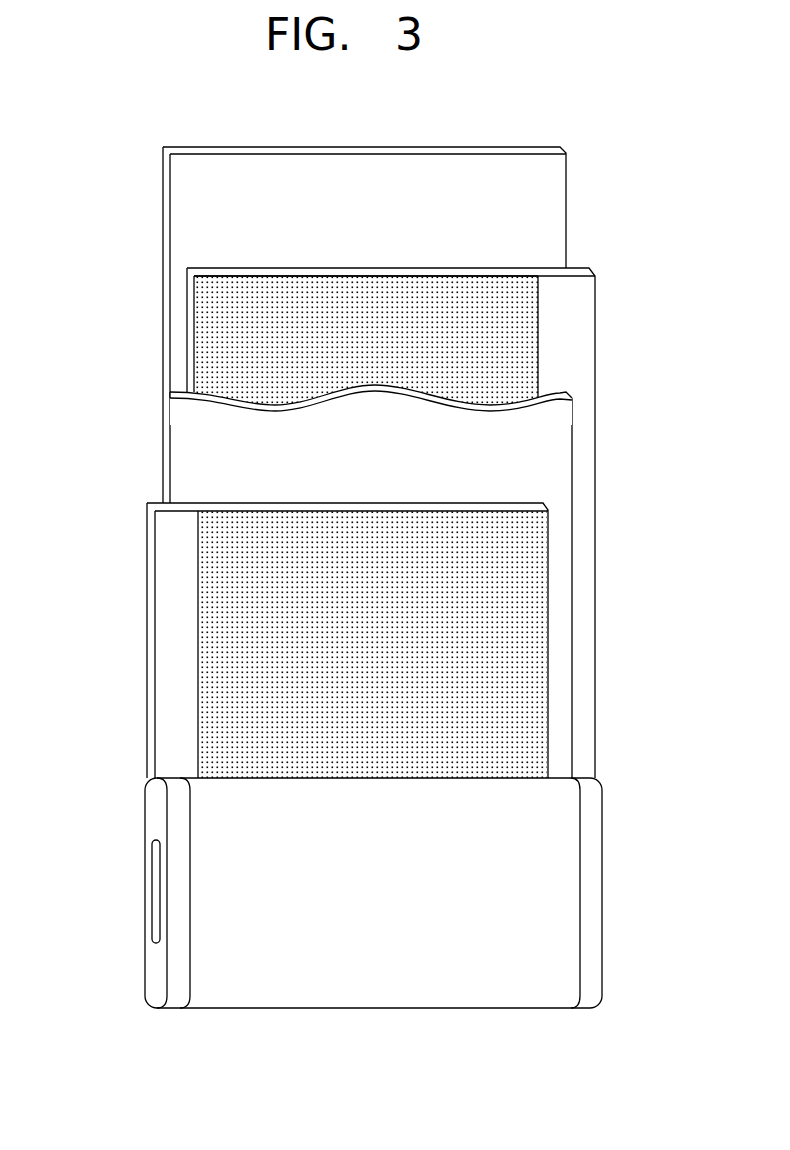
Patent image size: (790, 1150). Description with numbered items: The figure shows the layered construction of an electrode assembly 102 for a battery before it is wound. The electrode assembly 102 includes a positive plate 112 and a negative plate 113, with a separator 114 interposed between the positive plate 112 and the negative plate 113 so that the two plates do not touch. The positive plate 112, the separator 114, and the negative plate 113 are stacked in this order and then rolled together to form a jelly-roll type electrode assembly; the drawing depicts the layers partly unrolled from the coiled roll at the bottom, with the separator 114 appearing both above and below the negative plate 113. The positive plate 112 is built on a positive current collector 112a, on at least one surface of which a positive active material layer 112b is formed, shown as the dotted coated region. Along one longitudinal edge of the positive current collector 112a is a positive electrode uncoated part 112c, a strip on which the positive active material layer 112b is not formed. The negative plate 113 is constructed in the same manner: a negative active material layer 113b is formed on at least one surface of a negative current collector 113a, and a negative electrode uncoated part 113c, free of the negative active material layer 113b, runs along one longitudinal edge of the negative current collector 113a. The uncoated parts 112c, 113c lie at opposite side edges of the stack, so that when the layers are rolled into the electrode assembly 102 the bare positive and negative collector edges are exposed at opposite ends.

The electrode assembly 102 is at (378, 984).
The positive plate 112 is at (355, 615).
The positive current collector 112a is at (357, 506).
The positive active material layer 112b is at (528, 660).
The positive electrode uncoated part 112c is at (165, 695).
The negative plate 113 is at (366, 499).
The negative current collector 113a is at (368, 272).
The negative active material layer 113b is at (198, 320).
The negative electrode uncoated part 113c is at (582, 345).
The separator 114 is at (152, 222).